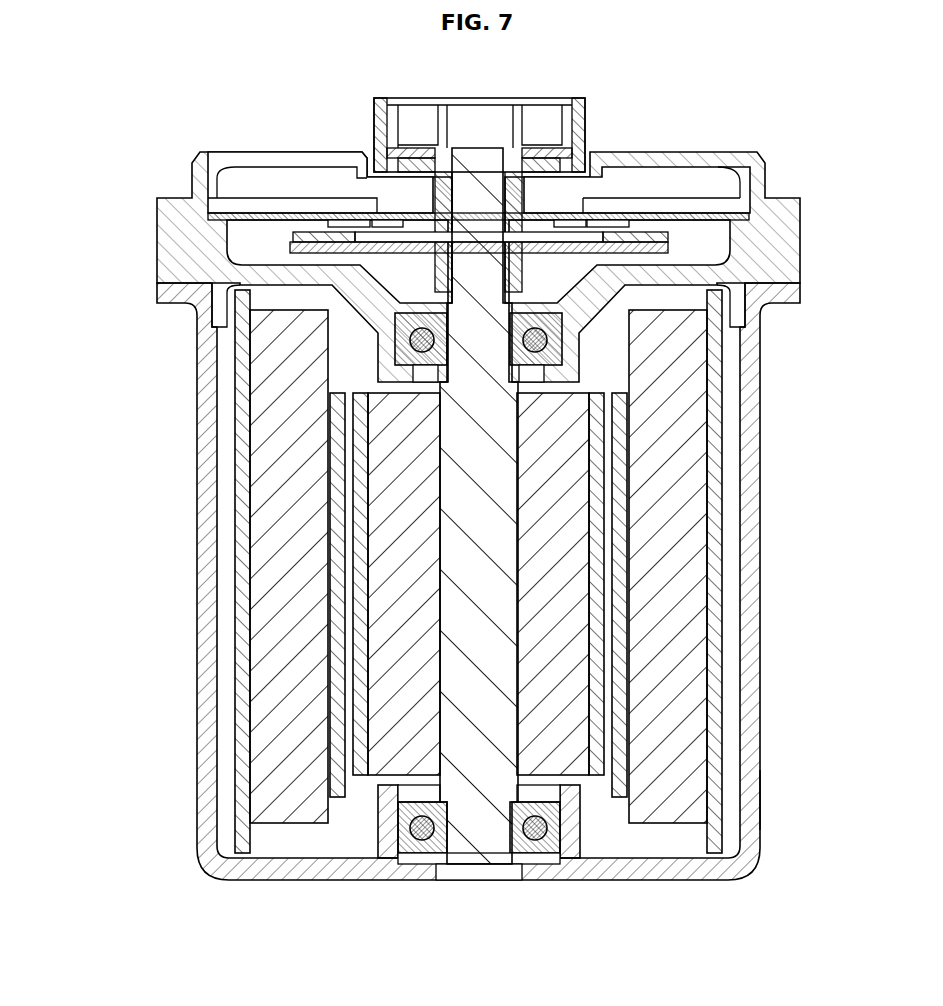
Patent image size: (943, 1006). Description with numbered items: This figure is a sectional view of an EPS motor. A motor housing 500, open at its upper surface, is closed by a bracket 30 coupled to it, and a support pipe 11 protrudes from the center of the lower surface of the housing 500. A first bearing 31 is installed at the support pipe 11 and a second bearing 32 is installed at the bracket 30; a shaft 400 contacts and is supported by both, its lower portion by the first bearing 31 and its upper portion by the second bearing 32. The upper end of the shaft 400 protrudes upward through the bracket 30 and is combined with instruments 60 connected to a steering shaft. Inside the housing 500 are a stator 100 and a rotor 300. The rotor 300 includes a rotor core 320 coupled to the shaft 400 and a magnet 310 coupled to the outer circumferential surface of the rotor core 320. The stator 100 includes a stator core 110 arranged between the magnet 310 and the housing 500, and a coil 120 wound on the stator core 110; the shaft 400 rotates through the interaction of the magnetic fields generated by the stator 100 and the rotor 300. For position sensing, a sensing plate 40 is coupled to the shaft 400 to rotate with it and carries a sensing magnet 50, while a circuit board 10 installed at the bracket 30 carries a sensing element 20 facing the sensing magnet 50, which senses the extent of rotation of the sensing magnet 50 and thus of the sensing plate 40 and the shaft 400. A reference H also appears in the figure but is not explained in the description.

The circuit board 10 is at (700, 217).
The support pipe 11 is at (572, 823).
The sensing element 20 is at (603, 223).
The bracket 30 is at (787, 230).
The first bearing 31 is at (535, 848).
The second bearing 32 is at (557, 350).
The sensing plate 40 is at (603, 228).
The sensing magnet 50 is at (642, 242).
The instruments 60 is at (577, 122).
The stator 100 is at (368, 571).
The stator core 110 is at (335, 750).
The coil 120 is at (282, 605).
The rotor 300 is at (636, 584).
The magnet 310 is at (600, 572).
The rotor core 320 is at (565, 628).
The shaft 400 is at (490, 712).
The motor housing 500 is at (186, 412).
The case wall H is at (760, 800).